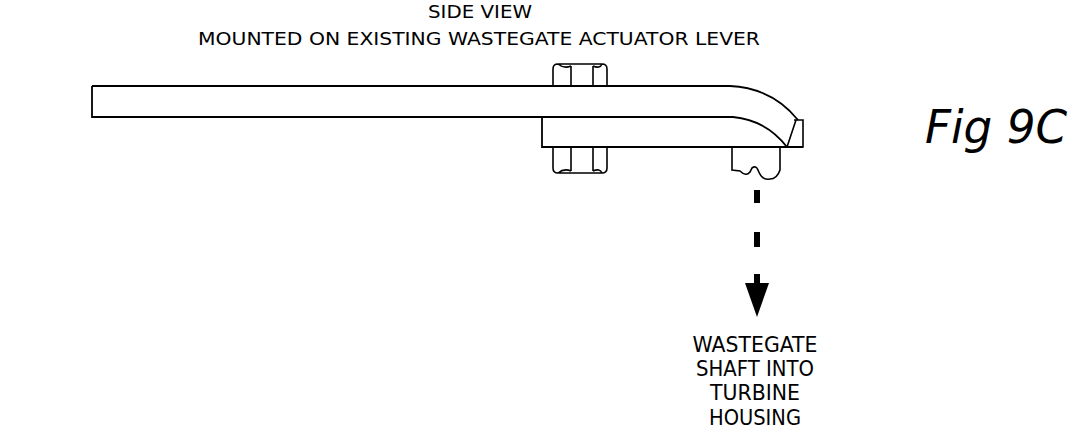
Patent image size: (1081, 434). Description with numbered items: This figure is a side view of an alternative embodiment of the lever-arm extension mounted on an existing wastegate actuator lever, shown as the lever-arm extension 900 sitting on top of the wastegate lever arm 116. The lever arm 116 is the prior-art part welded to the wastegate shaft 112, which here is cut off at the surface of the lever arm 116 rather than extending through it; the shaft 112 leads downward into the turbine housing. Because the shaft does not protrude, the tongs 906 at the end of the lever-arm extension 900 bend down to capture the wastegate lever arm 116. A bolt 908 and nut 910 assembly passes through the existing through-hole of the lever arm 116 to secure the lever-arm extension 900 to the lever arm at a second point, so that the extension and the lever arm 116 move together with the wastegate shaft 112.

The wastegate actuator lever extension bar 900 is at (163, 84).
The tongs 906 is at (798, 122).
The bolt 908 is at (578, 177).
The nut 910 is at (550, 75).
The lever arm 116 is at (703, 148).
The wastegate shaft 112 is at (778, 157).